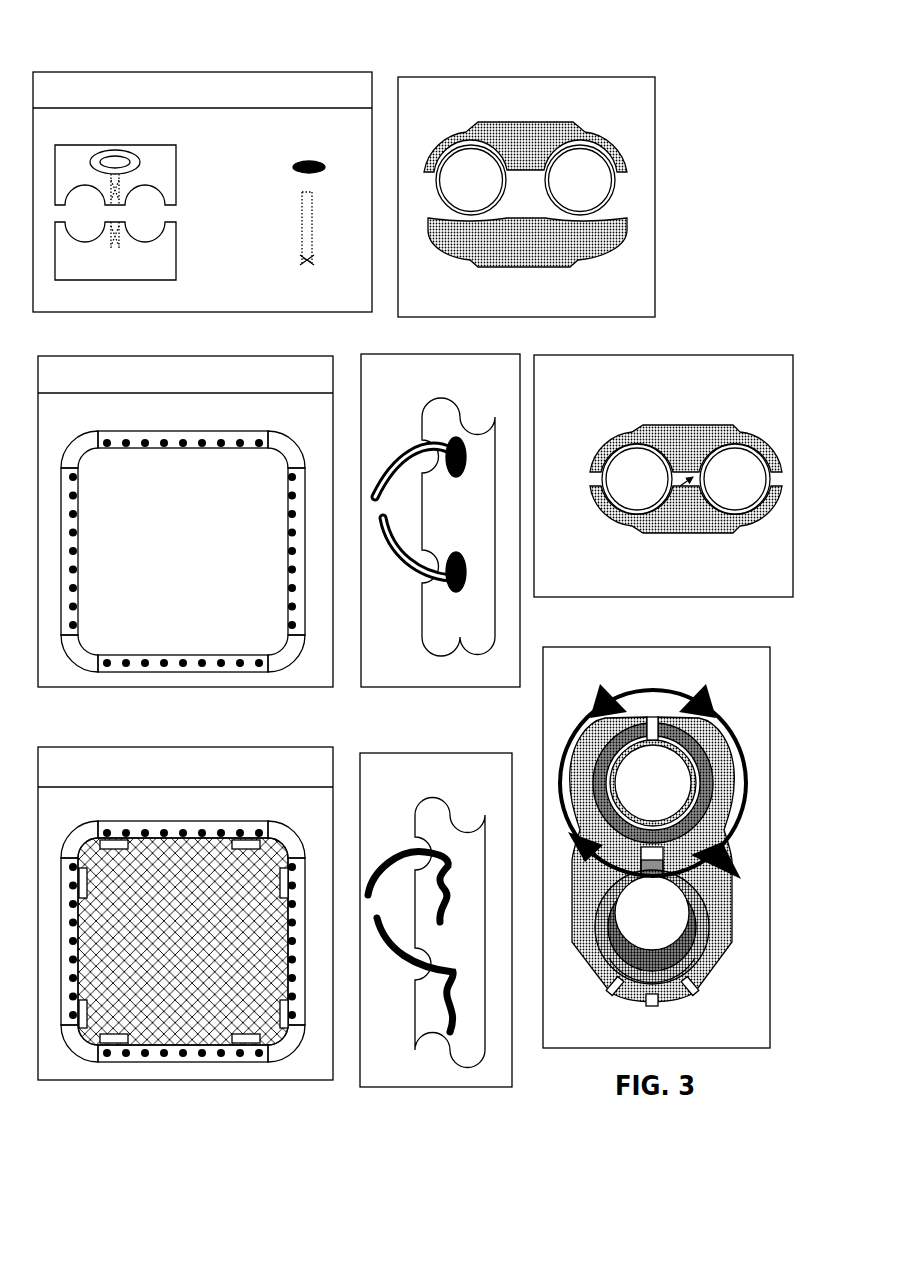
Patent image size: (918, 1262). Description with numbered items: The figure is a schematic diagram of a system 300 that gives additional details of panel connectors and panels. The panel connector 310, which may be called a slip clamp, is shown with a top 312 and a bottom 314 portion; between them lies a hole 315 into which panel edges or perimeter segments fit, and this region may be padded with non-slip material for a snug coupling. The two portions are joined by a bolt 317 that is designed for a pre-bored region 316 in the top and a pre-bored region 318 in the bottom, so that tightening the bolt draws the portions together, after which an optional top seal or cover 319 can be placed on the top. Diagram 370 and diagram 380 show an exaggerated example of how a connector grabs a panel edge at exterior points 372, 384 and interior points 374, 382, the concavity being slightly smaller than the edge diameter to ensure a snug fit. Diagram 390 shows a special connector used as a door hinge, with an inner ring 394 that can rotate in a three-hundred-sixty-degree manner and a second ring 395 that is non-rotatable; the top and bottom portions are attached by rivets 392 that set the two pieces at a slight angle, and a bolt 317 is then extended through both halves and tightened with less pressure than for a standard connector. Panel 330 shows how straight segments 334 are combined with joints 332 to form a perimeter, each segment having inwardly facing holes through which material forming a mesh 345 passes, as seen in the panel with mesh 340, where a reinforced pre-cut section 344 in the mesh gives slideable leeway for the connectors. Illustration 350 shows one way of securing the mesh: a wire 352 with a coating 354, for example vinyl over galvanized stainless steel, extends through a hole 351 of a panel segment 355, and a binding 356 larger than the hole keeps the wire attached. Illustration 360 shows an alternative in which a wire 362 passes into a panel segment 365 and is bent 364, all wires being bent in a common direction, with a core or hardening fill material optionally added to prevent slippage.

The system 300 is at (775, 23).
The panel connector 310 is at (202, 192).
The top portion 312 is at (160, 145).
The bottom portion 314 is at (172, 282).
The hole 315 is at (145, 212).
The pre-bored region 316 is at (120, 195).
The bolt 317 is at (312, 240).
The pre-bored region 318 is at (118, 240).
The top seal or cover 319 is at (304, 161).
The panel 330 is at (185, 521).
The joint 332 is at (287, 446).
The straight segment 334 is at (162, 432).
The panel with mesh 340 is at (186, 913).
The pre-cut section 344 is at (282, 873).
The mesh 345 is at (255, 947).
The illustration 350 is at (402, 383).
The hole 351 is at (422, 440).
The wire 352 is at (417, 568).
The coating 354 is at (383, 540).
The panel segment 355 is at (495, 612).
The binding 356 is at (455, 480).
The illustration 360 is at (400, 783).
The wire 362 is at (397, 960).
The bend 364 is at (447, 898).
The panel segment 365 is at (487, 1012).
The diagram 370 is at (437, 103).
The exterior point 372 is at (430, 175).
The interior point 374 is at (539, 176).
The diagram 380 is at (577, 383).
The interior point 382 is at (653, 482).
The exterior point 384 is at (780, 477).
The diagram 390 is at (578, 678).
The rivet 392 is at (683, 998).
The inner ring 394 is at (653, 737).
The second ring 395 is at (702, 928).